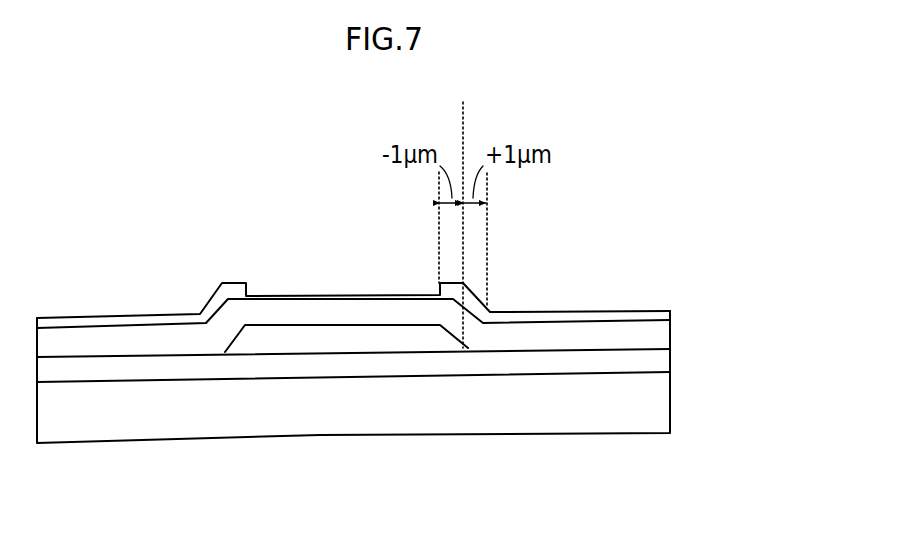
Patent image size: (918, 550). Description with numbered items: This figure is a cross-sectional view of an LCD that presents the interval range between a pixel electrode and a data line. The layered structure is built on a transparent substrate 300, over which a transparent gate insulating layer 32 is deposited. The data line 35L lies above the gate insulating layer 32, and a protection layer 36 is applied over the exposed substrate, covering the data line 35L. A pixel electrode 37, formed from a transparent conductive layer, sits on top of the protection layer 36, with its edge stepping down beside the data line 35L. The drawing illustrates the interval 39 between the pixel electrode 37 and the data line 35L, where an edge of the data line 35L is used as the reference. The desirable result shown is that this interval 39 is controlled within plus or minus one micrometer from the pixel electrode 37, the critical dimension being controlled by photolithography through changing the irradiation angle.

The transparent substrate 300 is at (643, 416).
The gate insulating layer 32 is at (657, 363).
The data line 35L is at (358, 338).
The protection layer 36 is at (662, 332).
The pixel electrode 37 is at (133, 320).
The interval 39 is at (463, 211).